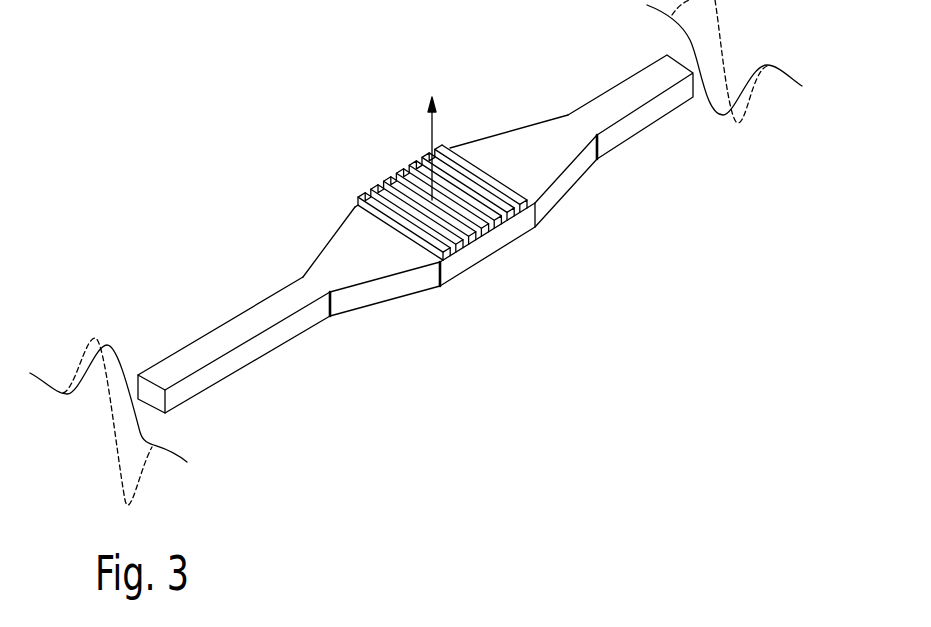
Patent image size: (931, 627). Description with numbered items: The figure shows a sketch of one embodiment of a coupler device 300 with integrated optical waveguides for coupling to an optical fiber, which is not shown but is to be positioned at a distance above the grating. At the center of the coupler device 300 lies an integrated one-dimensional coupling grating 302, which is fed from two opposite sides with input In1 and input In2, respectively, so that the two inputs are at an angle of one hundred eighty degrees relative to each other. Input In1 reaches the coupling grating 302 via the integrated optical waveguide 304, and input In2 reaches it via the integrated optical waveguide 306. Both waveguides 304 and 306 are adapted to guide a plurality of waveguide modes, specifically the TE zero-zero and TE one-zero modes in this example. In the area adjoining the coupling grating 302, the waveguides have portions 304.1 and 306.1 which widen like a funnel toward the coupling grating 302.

The coupler device 300 is at (325, 128).
The coupling grating 302 is at (490, 243).
The integrated optical waveguide 304 is at (232, 365).
The portion 304.1 is at (378, 293).
The integrated optical waveguide 306 is at (642, 120).
The portion 306.1 is at (568, 177).
The input In1 is at (148, 402).
The input In2 is at (684, 62).